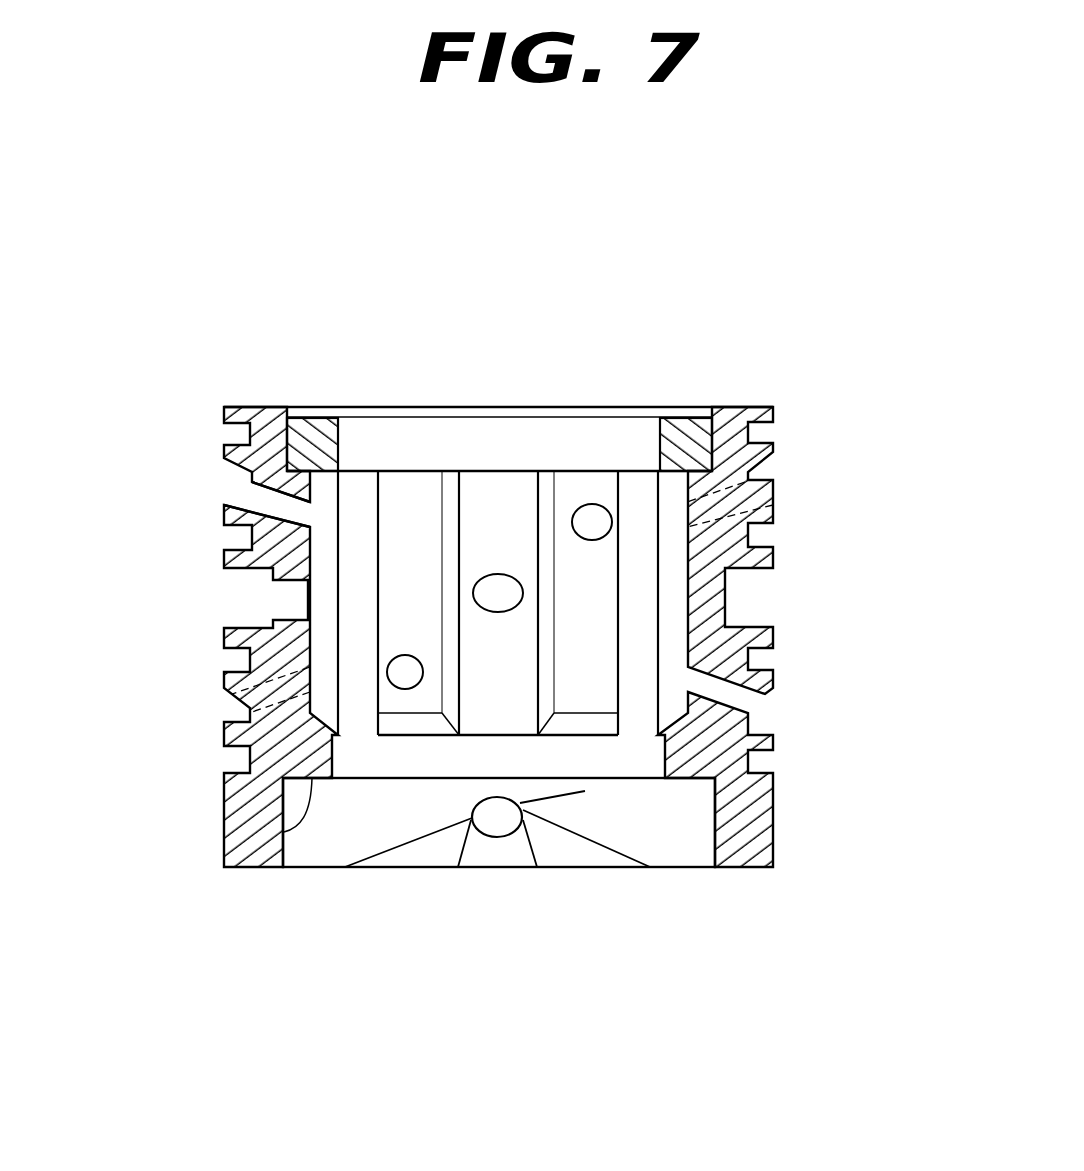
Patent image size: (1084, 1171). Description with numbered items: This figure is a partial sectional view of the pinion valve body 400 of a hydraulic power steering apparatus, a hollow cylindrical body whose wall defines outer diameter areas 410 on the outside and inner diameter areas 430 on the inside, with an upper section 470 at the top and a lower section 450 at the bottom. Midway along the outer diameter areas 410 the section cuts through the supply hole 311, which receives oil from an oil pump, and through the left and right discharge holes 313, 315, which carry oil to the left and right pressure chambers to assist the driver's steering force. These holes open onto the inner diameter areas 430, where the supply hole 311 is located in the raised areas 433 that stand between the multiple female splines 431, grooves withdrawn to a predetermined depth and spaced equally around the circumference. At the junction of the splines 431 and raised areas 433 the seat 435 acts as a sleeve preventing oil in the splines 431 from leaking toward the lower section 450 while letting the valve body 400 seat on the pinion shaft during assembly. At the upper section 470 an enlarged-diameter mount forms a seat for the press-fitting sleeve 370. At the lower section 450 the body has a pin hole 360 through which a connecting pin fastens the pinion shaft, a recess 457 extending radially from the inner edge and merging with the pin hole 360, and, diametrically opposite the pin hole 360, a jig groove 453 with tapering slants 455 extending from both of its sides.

The pinion valve body 400 is at (798, 356).
The outer diameter areas 410 is at (237, 415).
The upper section 470 is at (733, 432).
The inner diameter areas 430 is at (463, 303).
The female splines 431 is at (410, 482).
The raised areas 433 is at (499, 482).
The press-fitting sleeve 370 is at (306, 420).
The left discharge hole 313 is at (252, 490).
The supply hole 311 is at (282, 598).
The right discharge hole 315 is at (752, 702).
The lower section 450 is at (238, 826).
The seat 435 is at (260, 866).
The jig groove 453 is at (585, 791).
The tapering slants 455 is at (385, 853).
The recess 457 is at (517, 857).
The pin hole 360 is at (490, 823).